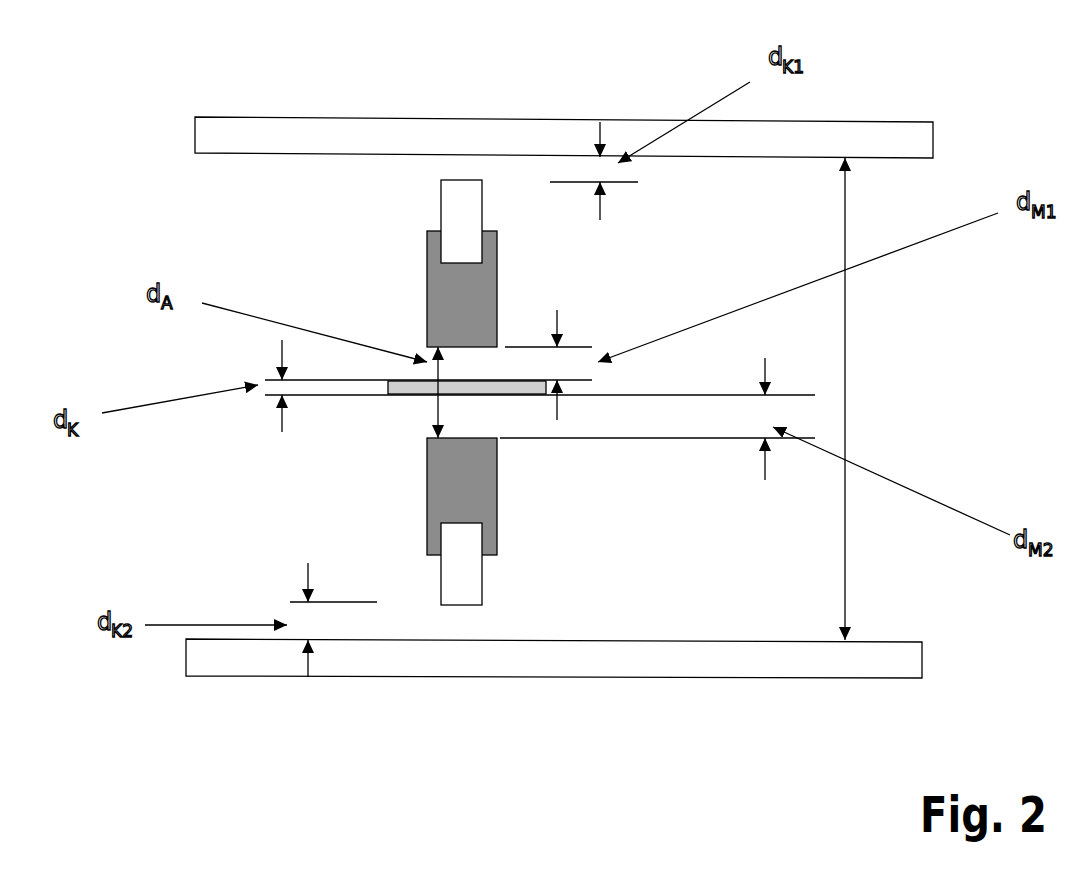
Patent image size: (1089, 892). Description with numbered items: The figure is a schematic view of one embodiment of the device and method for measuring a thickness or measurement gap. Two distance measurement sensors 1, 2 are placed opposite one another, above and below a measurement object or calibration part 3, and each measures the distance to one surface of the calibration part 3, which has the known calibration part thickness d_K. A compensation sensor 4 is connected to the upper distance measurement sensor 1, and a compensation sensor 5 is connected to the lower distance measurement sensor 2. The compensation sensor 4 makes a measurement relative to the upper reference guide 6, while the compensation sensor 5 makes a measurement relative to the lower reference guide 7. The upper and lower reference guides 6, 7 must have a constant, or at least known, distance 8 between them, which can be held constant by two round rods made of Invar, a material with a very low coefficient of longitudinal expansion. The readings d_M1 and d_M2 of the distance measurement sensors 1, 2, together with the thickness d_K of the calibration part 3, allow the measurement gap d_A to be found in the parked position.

The distance measurement sensor 1 is at (423, 302).
The distance measurement sensor 2 is at (423, 483).
The calibration part 3 is at (515, 392).
The compensation sensor 4 is at (433, 172).
The compensation sensor 5 is at (478, 607).
The upper reference guide 6 is at (893, 140).
The lower reference guide 7 is at (443, 668).
The distance 8 is at (847, 333).